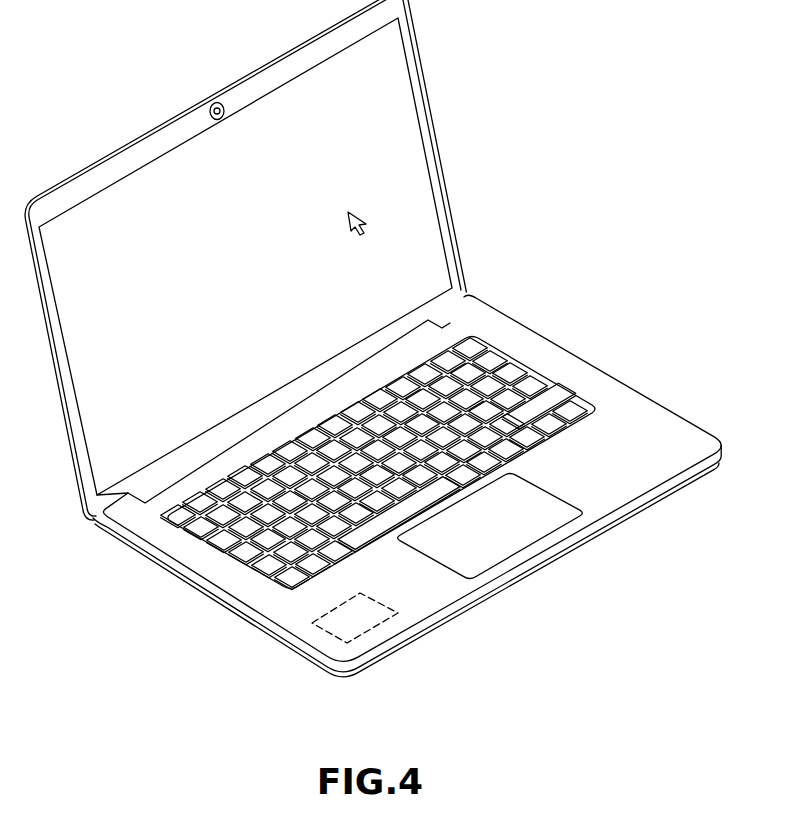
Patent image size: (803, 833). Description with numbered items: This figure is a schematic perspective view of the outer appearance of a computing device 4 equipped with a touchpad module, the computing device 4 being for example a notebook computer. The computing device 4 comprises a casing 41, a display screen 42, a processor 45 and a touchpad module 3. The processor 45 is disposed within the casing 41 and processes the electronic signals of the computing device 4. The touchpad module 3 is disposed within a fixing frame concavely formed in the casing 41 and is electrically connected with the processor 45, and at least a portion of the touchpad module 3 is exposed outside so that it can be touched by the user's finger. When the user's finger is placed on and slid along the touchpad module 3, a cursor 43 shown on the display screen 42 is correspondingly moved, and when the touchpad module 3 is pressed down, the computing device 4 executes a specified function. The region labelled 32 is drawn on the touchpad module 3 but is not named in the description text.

The computing device 4 is at (603, 115).
The casing 41 is at (628, 406).
The display screen 42 is at (400, 80).
The cursor 43 is at (352, 208).
The touchpad module 3 is at (527, 507).
The touchpad 32 is at (488, 550).
The processor 45 is at (345, 628).